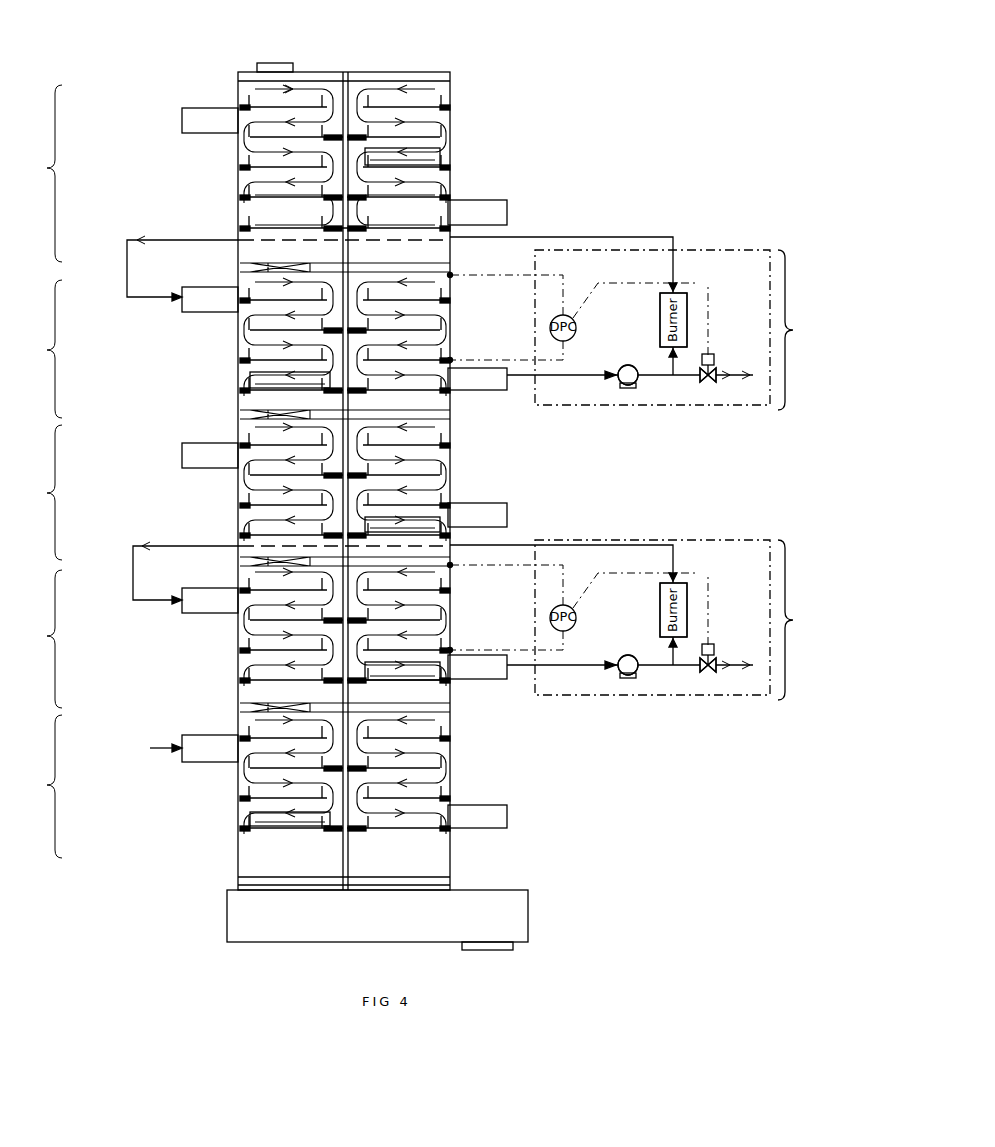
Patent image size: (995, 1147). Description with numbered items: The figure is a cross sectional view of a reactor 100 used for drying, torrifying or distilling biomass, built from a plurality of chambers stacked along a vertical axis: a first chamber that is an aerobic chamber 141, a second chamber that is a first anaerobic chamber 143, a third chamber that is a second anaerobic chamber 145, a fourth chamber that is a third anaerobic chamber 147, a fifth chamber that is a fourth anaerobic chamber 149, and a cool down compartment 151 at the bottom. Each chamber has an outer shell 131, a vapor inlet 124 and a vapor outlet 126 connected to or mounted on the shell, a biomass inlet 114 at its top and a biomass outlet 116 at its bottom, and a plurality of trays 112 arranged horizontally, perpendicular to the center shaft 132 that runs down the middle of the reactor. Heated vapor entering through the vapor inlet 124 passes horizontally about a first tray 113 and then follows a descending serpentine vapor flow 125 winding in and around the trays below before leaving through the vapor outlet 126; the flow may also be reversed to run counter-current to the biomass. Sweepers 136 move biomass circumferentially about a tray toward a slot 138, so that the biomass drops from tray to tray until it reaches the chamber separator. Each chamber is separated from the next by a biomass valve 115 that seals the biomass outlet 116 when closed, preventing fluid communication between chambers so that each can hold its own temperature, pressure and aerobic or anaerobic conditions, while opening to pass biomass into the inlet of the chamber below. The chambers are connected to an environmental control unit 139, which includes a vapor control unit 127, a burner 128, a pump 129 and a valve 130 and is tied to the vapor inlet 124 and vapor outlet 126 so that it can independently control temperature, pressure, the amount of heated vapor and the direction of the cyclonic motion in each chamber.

The reactor 100 is at (603, 24).
The trays 112 is at (412, 118).
The first tray 113 is at (318, 220).
The biomass inlet 114 is at (265, 62).
The biomass valve 115 is at (270, 268).
The biomass outlet 116 is at (292, 264).
The vapor inlet 124 is at (190, 108).
The vapor flow 125 is at (240, 160).
The vapor outlet 126 is at (470, 205).
The vapor control unit 127 is at (675, 410).
The burner 128 is at (658, 320).
The pump 129 is at (630, 366).
The valve 130 is at (710, 382).
The outer shell 131 is at (452, 96).
The center shaft 132 is at (450, 416).
The sweepers 136 is at (420, 148).
The slot 138 is at (432, 168).
The environmental control unit 139 is at (801, 475).
The aerobic chamber 141 is at (43, 173).
The first anaerobic chamber 143 is at (43, 349).
The second anaerobic chamber 145 is at (43, 492).
The third anaerobic chamber 147 is at (43, 639).
The fourth anaerobic chamber 149 is at (43, 786).
The cool down compartment 151 is at (377, 920).